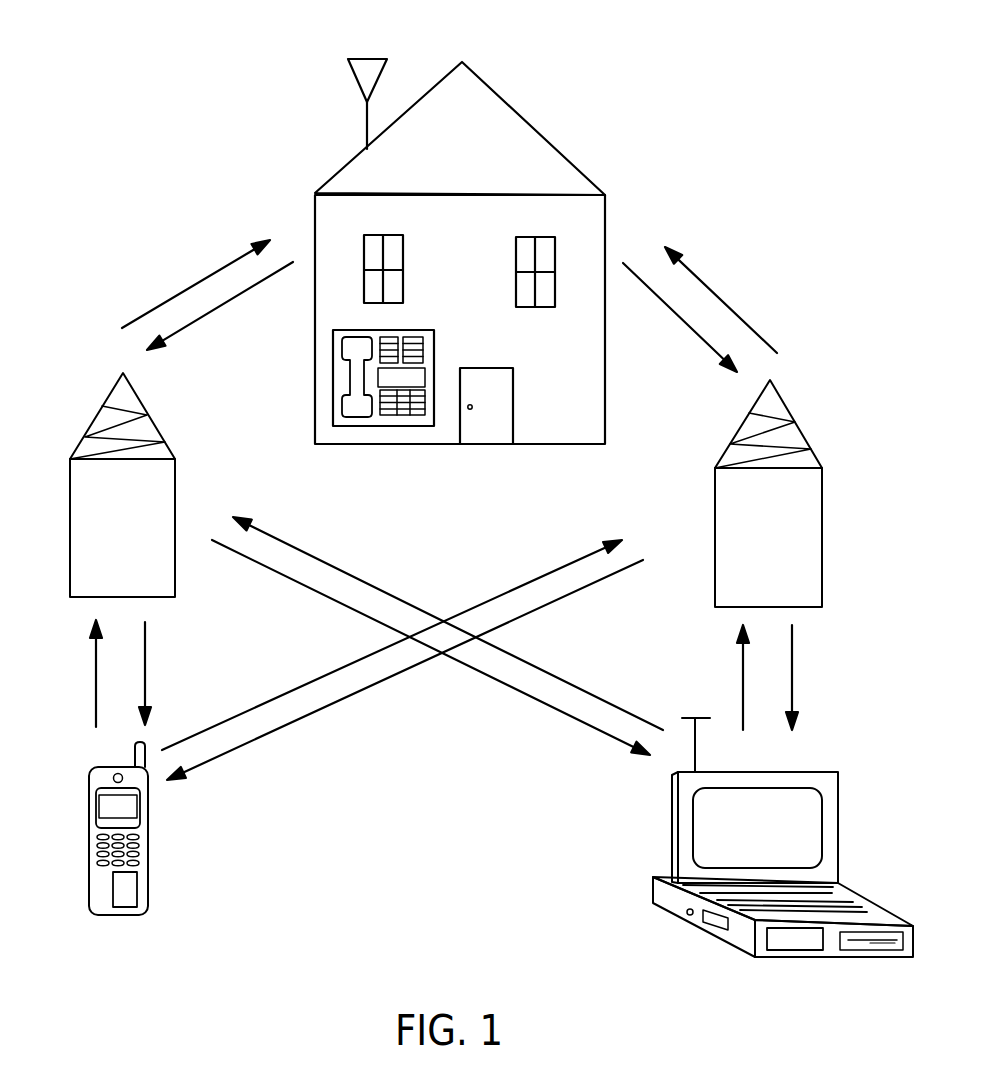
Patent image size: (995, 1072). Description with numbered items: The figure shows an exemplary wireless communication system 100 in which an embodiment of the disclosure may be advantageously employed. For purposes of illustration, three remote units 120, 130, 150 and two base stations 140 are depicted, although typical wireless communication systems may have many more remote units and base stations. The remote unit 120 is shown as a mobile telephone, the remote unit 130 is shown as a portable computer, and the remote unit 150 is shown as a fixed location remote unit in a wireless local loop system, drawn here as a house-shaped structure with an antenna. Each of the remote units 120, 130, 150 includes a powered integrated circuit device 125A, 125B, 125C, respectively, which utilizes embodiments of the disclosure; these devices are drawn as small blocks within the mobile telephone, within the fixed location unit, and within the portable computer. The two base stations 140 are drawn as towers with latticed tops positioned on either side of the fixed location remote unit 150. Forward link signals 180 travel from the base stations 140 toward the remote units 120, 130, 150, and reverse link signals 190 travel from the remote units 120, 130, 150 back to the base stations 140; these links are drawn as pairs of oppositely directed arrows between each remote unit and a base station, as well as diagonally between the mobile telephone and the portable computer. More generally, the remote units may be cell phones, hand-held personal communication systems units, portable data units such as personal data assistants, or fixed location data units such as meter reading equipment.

The wireless communication system 100 is at (136, 92).
The remote unit 120 is at (93, 777).
The powered integrated circuit device 125A is at (106, 916).
The powered integrated circuit device 125B is at (445, 390).
The powered integrated circuit device 125C is at (785, 967).
The remote unit 130 is at (815, 772).
The base station 140 is at (100, 410).
The remote unit 150 is at (432, 274).
The forward link signals 180 is at (200, 277).
The reverse link signals 190 is at (203, 318).